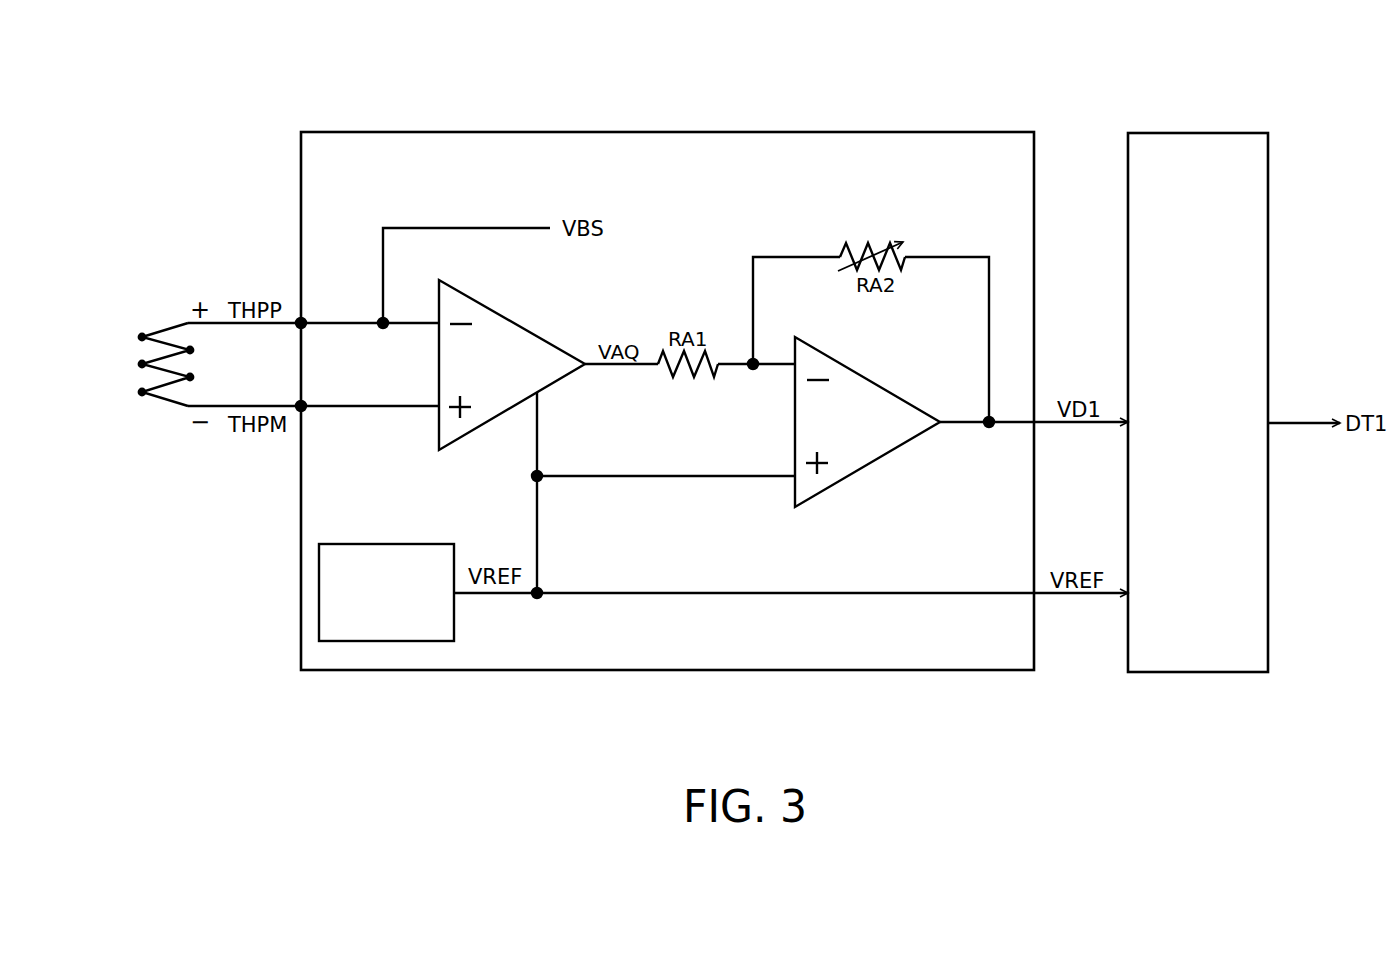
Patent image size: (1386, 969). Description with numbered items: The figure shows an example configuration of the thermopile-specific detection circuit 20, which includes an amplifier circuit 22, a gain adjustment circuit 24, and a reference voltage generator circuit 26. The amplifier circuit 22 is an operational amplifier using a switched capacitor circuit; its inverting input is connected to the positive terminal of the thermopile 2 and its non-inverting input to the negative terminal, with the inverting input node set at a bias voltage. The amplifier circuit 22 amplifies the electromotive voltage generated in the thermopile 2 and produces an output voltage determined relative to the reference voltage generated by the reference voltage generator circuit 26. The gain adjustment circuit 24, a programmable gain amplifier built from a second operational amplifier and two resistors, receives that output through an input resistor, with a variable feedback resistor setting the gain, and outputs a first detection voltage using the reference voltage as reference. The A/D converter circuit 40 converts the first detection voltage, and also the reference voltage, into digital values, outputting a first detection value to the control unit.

The thermopile 2 is at (150, 405).
The thermopile-specific detection circuit 20 is at (472, 132).
The amplifier circuit 22 is at (422, 467).
The gain adjustment circuit 24 is at (907, 465).
The reference voltage generator circuit 26 is at (455, 622).
The A/D converter circuit 40 is at (1222, 133).